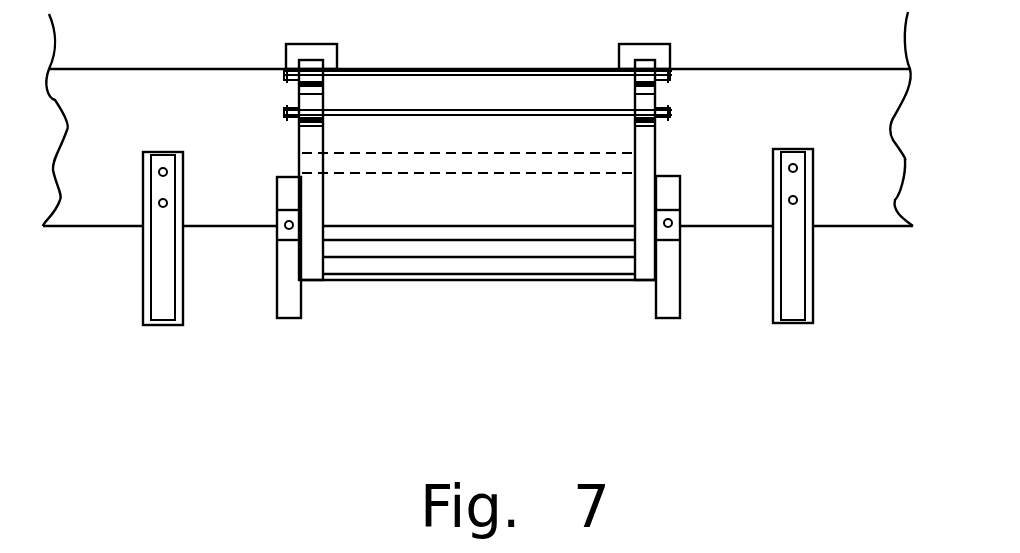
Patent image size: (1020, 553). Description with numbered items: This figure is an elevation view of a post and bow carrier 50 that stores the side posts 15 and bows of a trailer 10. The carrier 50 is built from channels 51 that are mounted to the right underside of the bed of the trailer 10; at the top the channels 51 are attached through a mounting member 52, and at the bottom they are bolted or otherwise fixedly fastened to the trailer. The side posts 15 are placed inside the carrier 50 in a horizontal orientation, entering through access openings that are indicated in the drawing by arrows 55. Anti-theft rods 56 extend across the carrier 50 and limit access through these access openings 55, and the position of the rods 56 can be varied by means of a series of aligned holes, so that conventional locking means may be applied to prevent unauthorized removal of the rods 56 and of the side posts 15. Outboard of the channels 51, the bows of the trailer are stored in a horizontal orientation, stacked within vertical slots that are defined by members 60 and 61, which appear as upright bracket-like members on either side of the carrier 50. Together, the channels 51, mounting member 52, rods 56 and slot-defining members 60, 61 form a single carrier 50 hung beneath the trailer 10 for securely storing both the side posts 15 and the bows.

The trailer 10 is at (717, 202).
The side posts 15 is at (525, 153).
The carrier 50 is at (477, 221).
The channels 51 is at (283, 73).
The mounting member 52 is at (312, 48).
The access openings 55 is at (330, 87).
The anti-theft rods 56 is at (512, 110).
The members 60 is at (287, 265).
The members 61 is at (183, 272).